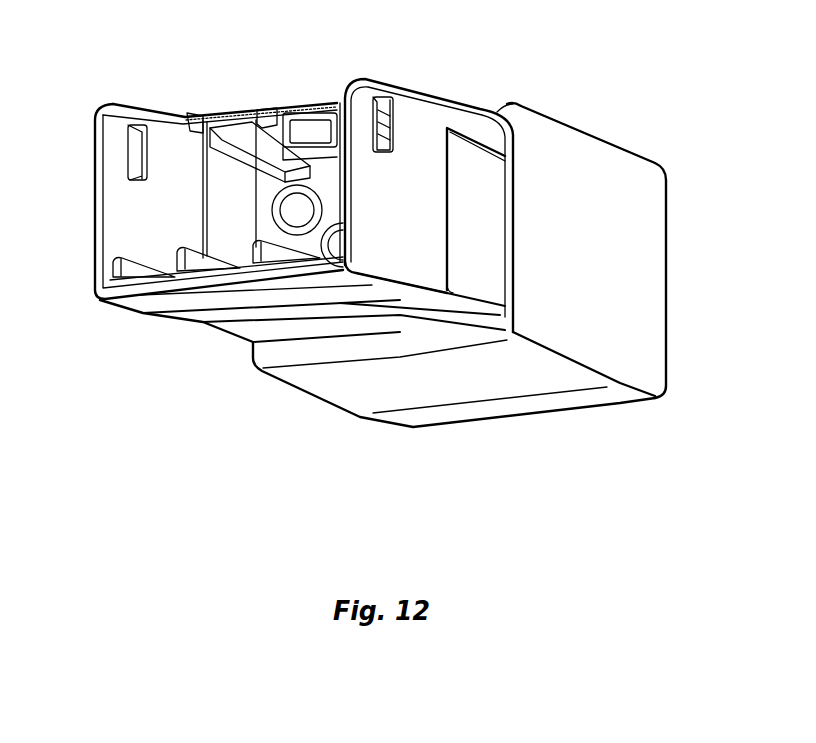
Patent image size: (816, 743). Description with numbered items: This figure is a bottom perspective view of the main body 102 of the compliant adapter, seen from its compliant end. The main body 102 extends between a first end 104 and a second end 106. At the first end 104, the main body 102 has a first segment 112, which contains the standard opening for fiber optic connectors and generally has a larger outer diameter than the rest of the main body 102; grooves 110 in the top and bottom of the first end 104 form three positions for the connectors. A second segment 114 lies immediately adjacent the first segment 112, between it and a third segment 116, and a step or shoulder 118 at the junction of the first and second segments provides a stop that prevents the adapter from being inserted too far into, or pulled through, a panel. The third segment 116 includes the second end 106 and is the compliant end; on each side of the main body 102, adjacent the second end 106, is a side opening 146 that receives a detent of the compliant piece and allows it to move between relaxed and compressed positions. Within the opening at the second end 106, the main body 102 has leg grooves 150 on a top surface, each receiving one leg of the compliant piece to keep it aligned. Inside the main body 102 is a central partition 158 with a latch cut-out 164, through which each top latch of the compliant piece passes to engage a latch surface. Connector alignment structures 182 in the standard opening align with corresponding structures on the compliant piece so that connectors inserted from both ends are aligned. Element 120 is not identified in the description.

The main body 102 is at (666, 168).
The first end 104 is at (684, 399).
The second end 106 is at (91, 312).
The grooves 110 is at (227, 125).
The first segment 112 is at (597, 140).
The second segment 114 is at (443, 93).
The third segment 116 is at (407, 287).
The shoulder 118 is at (490, 110).
The panel 120 is at (496, 228).
The side openings 146 is at (125, 140).
The leg grooves 150 is at (263, 112).
The central partition 158 is at (326, 182).
The latch cut-out 164 is at (268, 178).
The connector alignment structures 182 is at (306, 236).